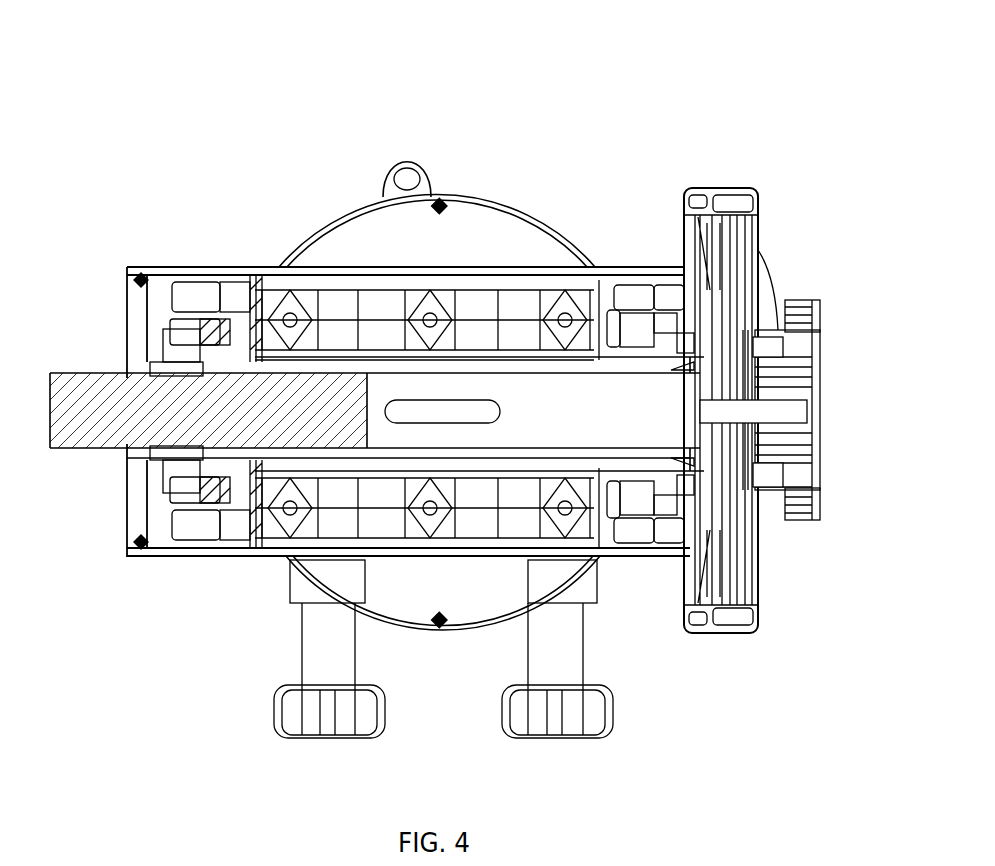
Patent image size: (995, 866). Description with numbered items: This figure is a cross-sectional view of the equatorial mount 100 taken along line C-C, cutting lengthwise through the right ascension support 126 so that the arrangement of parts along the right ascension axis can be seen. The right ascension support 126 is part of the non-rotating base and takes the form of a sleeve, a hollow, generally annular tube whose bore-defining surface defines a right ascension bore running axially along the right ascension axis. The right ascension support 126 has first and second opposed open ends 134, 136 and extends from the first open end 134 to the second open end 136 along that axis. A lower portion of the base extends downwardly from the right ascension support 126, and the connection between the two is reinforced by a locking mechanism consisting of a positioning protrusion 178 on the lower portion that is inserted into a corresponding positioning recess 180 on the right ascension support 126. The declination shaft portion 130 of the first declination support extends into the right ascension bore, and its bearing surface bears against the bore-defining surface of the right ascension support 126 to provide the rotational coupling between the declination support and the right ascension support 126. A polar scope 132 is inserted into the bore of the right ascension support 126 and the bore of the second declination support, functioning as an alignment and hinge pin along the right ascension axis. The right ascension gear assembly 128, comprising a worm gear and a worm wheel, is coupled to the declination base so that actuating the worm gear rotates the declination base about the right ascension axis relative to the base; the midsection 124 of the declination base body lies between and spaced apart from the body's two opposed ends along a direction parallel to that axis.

The equatorial mount 100 is at (125, 88).
The midsection 124 is at (160, 537).
The right ascension support 126 is at (238, 365).
The right ascension gear assembly 128 is at (713, 582).
The declination shaft portion 130 is at (643, 430).
The polar scope 132 is at (70, 398).
The first open end 134 is at (747, 387).
The second open end 136 is at (152, 377).
The positioning protrusion 178 is at (487, 418).
The positioning recess 180 is at (453, 397).